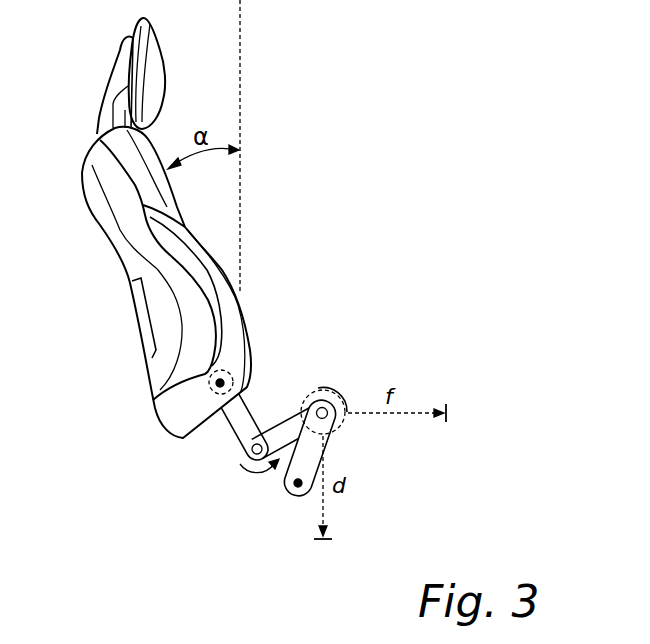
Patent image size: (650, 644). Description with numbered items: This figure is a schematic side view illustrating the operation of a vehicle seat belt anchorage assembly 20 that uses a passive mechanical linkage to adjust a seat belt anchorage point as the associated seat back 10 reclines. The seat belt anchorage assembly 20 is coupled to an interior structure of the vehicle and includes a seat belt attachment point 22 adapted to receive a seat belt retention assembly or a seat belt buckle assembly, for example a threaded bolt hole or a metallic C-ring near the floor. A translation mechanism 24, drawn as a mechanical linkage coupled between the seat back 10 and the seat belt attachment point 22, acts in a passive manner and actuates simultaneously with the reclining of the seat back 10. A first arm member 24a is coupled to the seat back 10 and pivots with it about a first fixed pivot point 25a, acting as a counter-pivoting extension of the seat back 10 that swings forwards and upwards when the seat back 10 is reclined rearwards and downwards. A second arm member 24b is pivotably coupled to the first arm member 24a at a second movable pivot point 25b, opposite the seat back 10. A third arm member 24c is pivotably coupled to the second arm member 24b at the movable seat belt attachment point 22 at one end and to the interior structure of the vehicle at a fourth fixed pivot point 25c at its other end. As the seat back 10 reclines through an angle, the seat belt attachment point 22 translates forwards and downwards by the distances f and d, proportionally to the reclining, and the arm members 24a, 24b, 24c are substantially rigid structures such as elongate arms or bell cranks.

The seat back 10 is at (121, 238).
The seat belt anchorage assembly 20 is at (203, 489).
The seat belt attachment point 22 is at (327, 393).
The translation mechanism 24 is at (273, 389).
The first arm member 24a is at (240, 448).
The second arm member 24b is at (294, 444).
The third arm member 24c is at (323, 465).
The first fixed pivot point 25a is at (210, 392).
The second movable pivot point 25b is at (257, 456).
The fourth fixed pivot point 25c is at (298, 490).